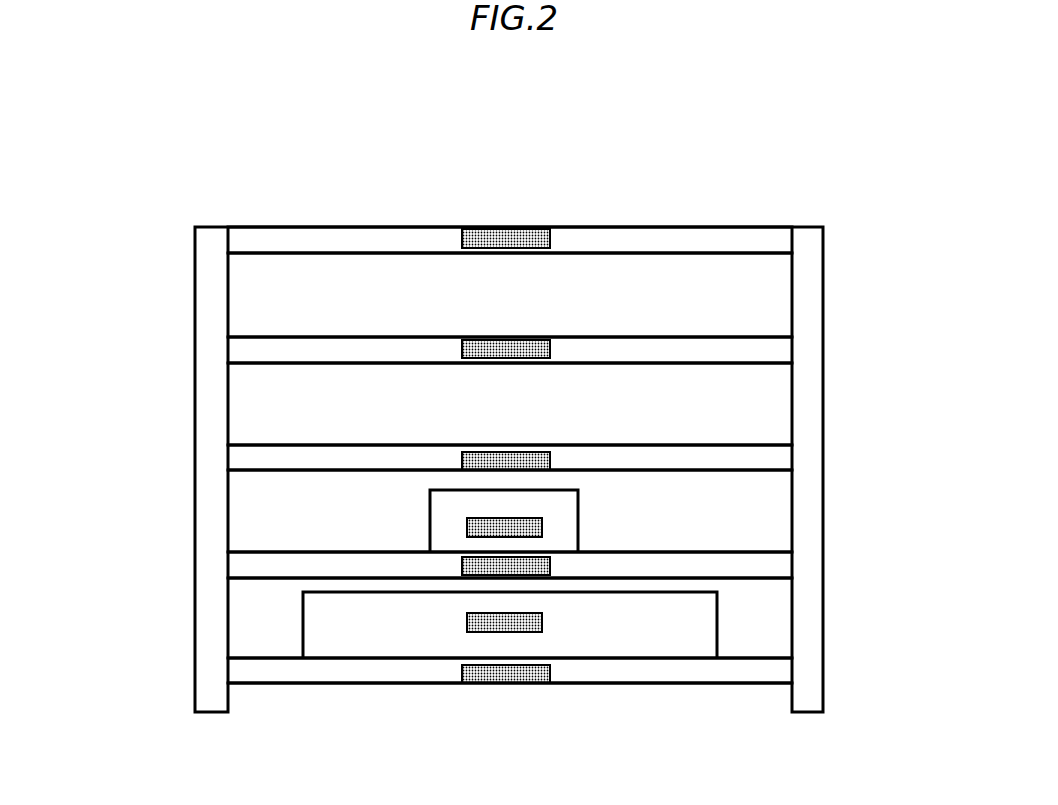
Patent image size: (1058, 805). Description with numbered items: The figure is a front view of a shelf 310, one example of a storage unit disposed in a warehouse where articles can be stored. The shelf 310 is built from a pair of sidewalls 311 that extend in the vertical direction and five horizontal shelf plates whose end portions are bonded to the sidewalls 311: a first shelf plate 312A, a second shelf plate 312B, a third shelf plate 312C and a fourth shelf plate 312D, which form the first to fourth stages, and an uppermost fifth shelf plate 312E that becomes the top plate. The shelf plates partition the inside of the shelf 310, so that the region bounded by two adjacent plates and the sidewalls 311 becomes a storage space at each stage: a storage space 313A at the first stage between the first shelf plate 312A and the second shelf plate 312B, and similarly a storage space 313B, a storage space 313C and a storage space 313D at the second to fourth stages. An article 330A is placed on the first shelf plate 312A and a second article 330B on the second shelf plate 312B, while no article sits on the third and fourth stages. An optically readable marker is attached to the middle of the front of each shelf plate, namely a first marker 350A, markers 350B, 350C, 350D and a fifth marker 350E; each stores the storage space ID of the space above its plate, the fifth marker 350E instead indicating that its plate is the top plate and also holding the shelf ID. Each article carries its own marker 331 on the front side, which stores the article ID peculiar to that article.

The shelf 310 is at (503, 425).
The sidewall 311 is at (200, 370).
The first shelf plate 312A is at (753, 668).
The second shelf plate 312B is at (753, 560).
The third shelf plate 312C is at (753, 455).
The fourth shelf plate 312D is at (753, 350).
The fifth shelf plate 312E is at (755, 238).
The storage space 313A is at (247, 630).
The storage space 313B is at (240, 519).
The storage space 313C is at (245, 428).
The storage space 313D is at (245, 305).
The article 330A is at (717, 615).
The second article 330B is at (578, 500).
The marker 331 is at (542, 525).
The first marker 350A is at (465, 683).
The marker 350B is at (463, 565).
The marker 350C is at (467, 450).
The marker 350D is at (467, 342).
The fifth marker 350E is at (470, 232).